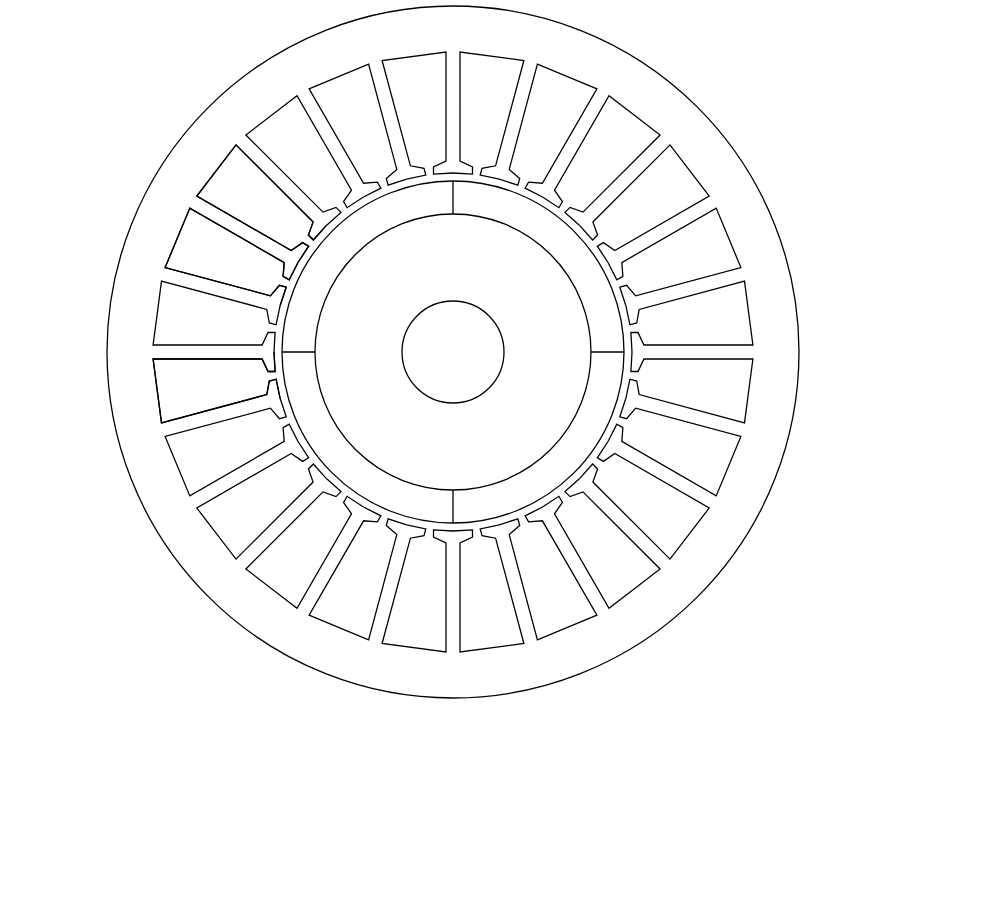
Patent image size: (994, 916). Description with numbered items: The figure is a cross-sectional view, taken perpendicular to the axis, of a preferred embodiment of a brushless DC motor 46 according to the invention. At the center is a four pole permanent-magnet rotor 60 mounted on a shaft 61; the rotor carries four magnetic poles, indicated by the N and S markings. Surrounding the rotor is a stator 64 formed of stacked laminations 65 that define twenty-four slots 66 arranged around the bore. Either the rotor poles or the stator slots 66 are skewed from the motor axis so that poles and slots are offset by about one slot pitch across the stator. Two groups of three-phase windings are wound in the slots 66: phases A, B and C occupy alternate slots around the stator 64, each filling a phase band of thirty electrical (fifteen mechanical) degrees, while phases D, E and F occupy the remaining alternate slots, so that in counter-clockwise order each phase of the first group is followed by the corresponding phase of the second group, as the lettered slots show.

The brushless DC motor 46 is at (146, 80).
The PM rotor 60 is at (478, 243).
The shaft 61 is at (482, 338).
The stator 64 is at (720, 547).
The stacked laminations 65 is at (757, 438).
The slots 66 is at (226, 163).